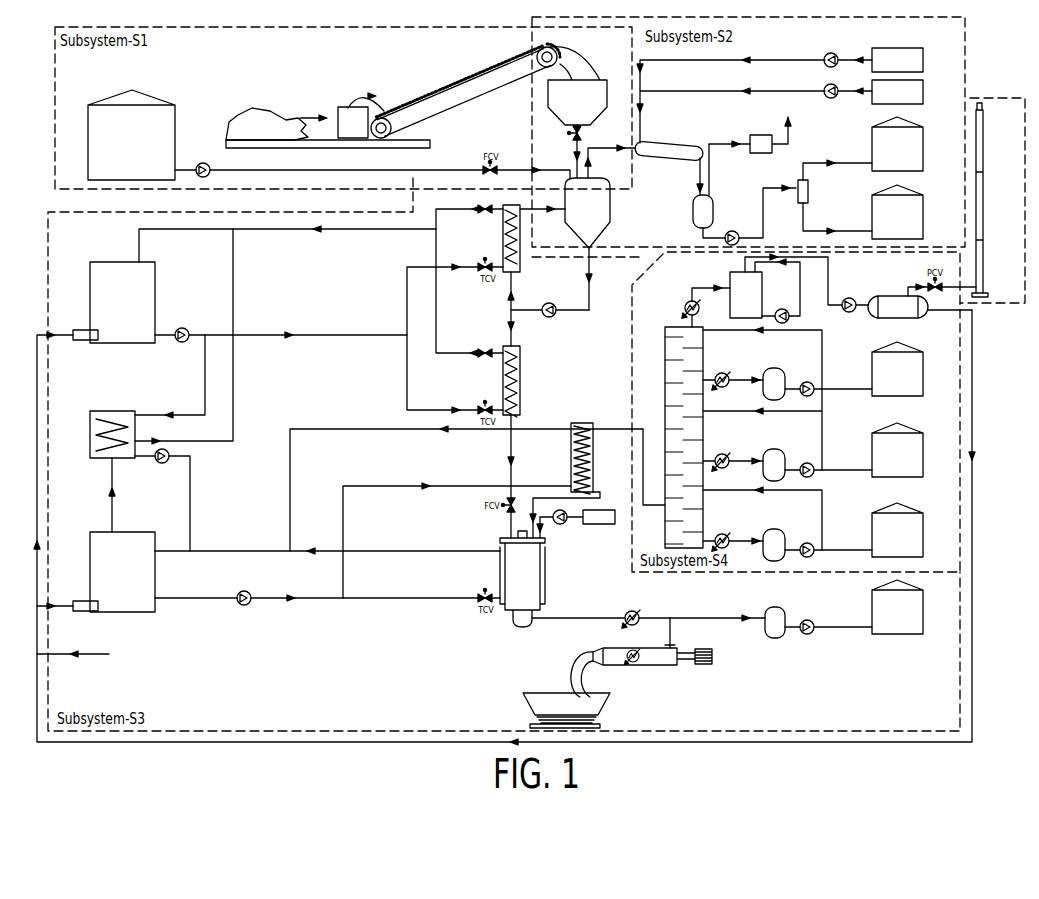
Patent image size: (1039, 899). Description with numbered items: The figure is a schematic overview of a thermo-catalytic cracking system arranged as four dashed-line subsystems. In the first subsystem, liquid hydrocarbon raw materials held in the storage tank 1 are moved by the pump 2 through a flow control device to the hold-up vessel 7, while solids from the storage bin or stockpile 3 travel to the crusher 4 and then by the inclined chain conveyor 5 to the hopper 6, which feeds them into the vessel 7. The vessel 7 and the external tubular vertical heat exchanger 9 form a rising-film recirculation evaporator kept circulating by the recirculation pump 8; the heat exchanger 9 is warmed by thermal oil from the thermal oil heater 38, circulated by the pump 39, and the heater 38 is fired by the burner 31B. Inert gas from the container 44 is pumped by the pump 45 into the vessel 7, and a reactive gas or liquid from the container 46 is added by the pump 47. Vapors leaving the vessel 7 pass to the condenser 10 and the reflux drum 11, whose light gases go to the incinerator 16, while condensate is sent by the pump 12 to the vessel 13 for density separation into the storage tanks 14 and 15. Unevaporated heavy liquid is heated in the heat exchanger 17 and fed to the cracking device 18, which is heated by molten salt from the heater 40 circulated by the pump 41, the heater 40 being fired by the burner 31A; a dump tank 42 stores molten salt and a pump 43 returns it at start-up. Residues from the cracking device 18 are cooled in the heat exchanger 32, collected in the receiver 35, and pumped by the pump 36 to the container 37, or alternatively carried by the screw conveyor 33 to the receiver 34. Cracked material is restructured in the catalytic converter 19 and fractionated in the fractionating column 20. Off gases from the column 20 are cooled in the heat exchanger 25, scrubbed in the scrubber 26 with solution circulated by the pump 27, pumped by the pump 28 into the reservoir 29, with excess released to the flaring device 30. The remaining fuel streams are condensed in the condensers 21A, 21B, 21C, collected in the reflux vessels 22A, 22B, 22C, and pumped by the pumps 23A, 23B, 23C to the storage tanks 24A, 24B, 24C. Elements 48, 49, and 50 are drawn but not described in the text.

The storage tank 1 is at (132, 86).
The pump 2 is at (203, 160).
The storage bin or stockpile 3 is at (257, 105).
The crusher 4 is at (342, 104).
The inclined chain conveyor 5 is at (465, 72).
The hopper 6 is at (597, 77).
The hold-up vessel 7 is at (613, 203).
The recirculation pump 8 is at (549, 300).
The heat exchanger 9 is at (499, 238).
The condenser 10 is at (670, 142).
The reflux drum 11 is at (690, 211).
The pump 12 is at (732, 229).
The vessel 13 is at (811, 191).
The storage tank 14 is at (926, 148).
The storage tank 15 is at (926, 216).
The incinerator 16 is at (759, 132).
The heat exchanger 17 is at (524, 380).
The cracking device 18 is at (548, 577).
The catalytic converter 19 is at (596, 457).
The fractionating column 20 is at (665, 380).
The condenser 21A is at (722, 532).
The condenser 21B is at (722, 452).
The condenser 21C is at (722, 371).
The reflux vessel 22A is at (773, 527).
The reflux vessel 22B is at (773, 447).
The reflux vessel 22C is at (773, 366).
The pump 23A is at (807, 541).
The pump 23B is at (807, 461).
The pump 23C is at (807, 380).
The storage tank 24A is at (926, 535).
The storage tank 24B is at (926, 455).
The storage tank 24C is at (926, 375).
The heat exchanger 25 is at (681, 308).
The scrubber 26 is at (727, 272).
The pump 27 is at (782, 307).
The pump 28 is at (849, 296).
The reservoir 29 is at (897, 293).
The flaring device 30 is at (986, 228).
The burner 31A is at (77, 598).
The burner 31B is at (75, 327).
The heat exchanger 32 is at (632, 608).
The screw conveyor 33 is at (715, 657).
The receiver 34 is at (613, 695).
The receiver 35 is at (773, 604).
The pump 36 is at (807, 618).
The container 37 is at (926, 612).
The thermal oil heater 38 is at (122, 259).
The pump 39 is at (182, 326).
The heater 40 is at (159, 572).
The pump 41 is at (244, 589).
The dump tank 42 is at (111, 408).
The pump 43 is at (162, 466).
The container 44 is at (926, 91).
The pump 45 is at (831, 100).
The container 46 is at (926, 60).
The pump 47 is at (831, 51).
The unit 48 is at (598, 527).
The pump 49 is at (560, 527).
The water supply line 50 is at (82, 654).